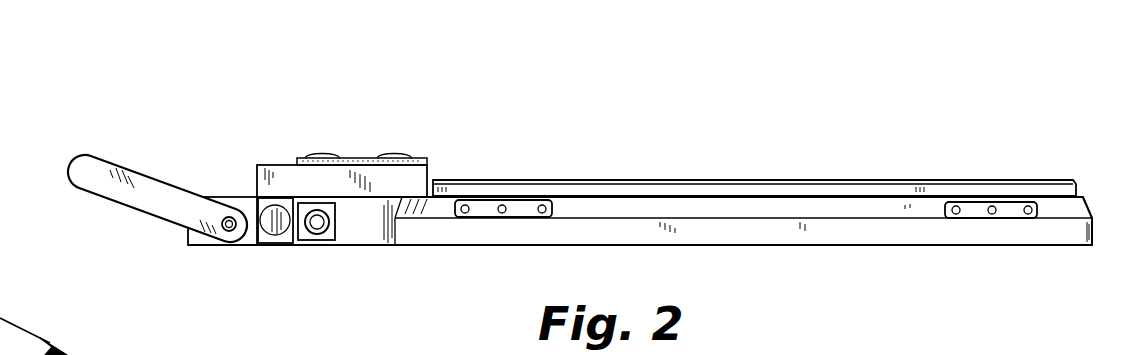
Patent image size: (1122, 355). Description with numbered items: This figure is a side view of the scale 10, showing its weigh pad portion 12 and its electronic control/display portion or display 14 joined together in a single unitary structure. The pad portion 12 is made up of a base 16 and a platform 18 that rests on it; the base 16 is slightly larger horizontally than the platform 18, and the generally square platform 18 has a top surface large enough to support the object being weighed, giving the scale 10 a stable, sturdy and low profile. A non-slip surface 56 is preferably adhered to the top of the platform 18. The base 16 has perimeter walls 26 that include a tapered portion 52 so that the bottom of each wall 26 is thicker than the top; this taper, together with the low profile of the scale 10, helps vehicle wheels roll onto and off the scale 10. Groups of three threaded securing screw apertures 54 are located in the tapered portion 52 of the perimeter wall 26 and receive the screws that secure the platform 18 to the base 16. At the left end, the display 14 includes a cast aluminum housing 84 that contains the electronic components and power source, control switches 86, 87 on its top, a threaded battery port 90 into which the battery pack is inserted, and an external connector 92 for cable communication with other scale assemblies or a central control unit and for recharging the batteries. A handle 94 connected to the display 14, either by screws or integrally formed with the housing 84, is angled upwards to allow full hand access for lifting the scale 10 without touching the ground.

The scale 10 is at (140, 100).
The weigh pad portion 12 is at (647, 143).
The display 14 is at (358, 122).
The base 16 is at (1025, 258).
The platform 18 is at (1078, 187).
The perimeter walls 26 is at (833, 237).
The tapered portion 52 is at (1082, 218).
The securing screw apertures 54 is at (465, 217).
The non-slip surface 56 is at (500, 178).
The housing 84 is at (270, 165).
The ON control switch 86 is at (403, 155).
The OFF control switch 87 is at (323, 155).
The threaded battery port 90 is at (270, 228).
The external connector 92 is at (317, 226).
The handle 94 is at (132, 207).